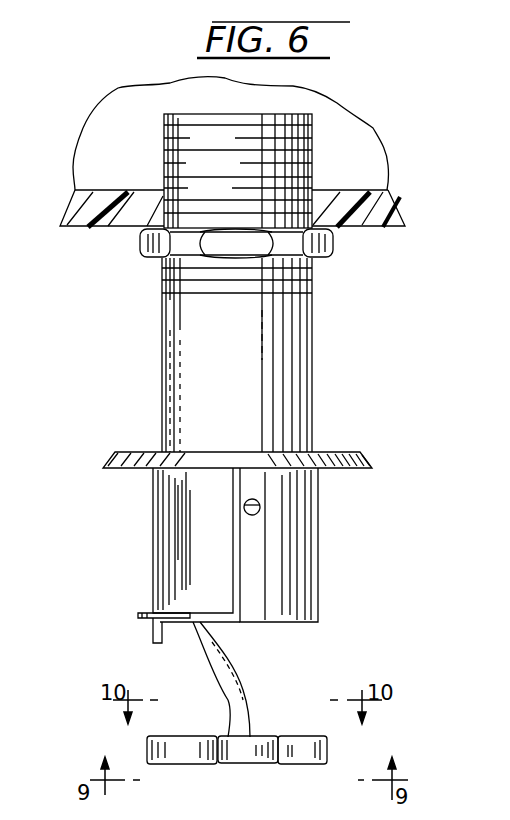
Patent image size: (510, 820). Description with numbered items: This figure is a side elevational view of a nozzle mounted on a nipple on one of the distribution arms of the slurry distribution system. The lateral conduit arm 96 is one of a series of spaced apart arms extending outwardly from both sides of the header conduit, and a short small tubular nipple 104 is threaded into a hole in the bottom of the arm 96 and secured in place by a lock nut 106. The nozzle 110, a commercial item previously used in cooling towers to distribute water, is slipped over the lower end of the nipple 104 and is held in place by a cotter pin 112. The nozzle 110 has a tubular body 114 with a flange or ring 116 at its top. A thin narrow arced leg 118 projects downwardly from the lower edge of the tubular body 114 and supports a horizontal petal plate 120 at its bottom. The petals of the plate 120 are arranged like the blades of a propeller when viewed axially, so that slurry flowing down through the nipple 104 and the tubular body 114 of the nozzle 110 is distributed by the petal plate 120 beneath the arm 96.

The lateral conduit arm 96 is at (118, 219).
The nipple 104 is at (303, 373).
The lock nut 106 is at (327, 243).
The nozzle 110 is at (296, 632).
The cotter pin 112 is at (253, 514).
The tubular body 114 is at (187, 510).
The flange or ring 116 is at (125, 457).
The arced leg 118 is at (178, 645).
The petal plate 120 is at (191, 770).